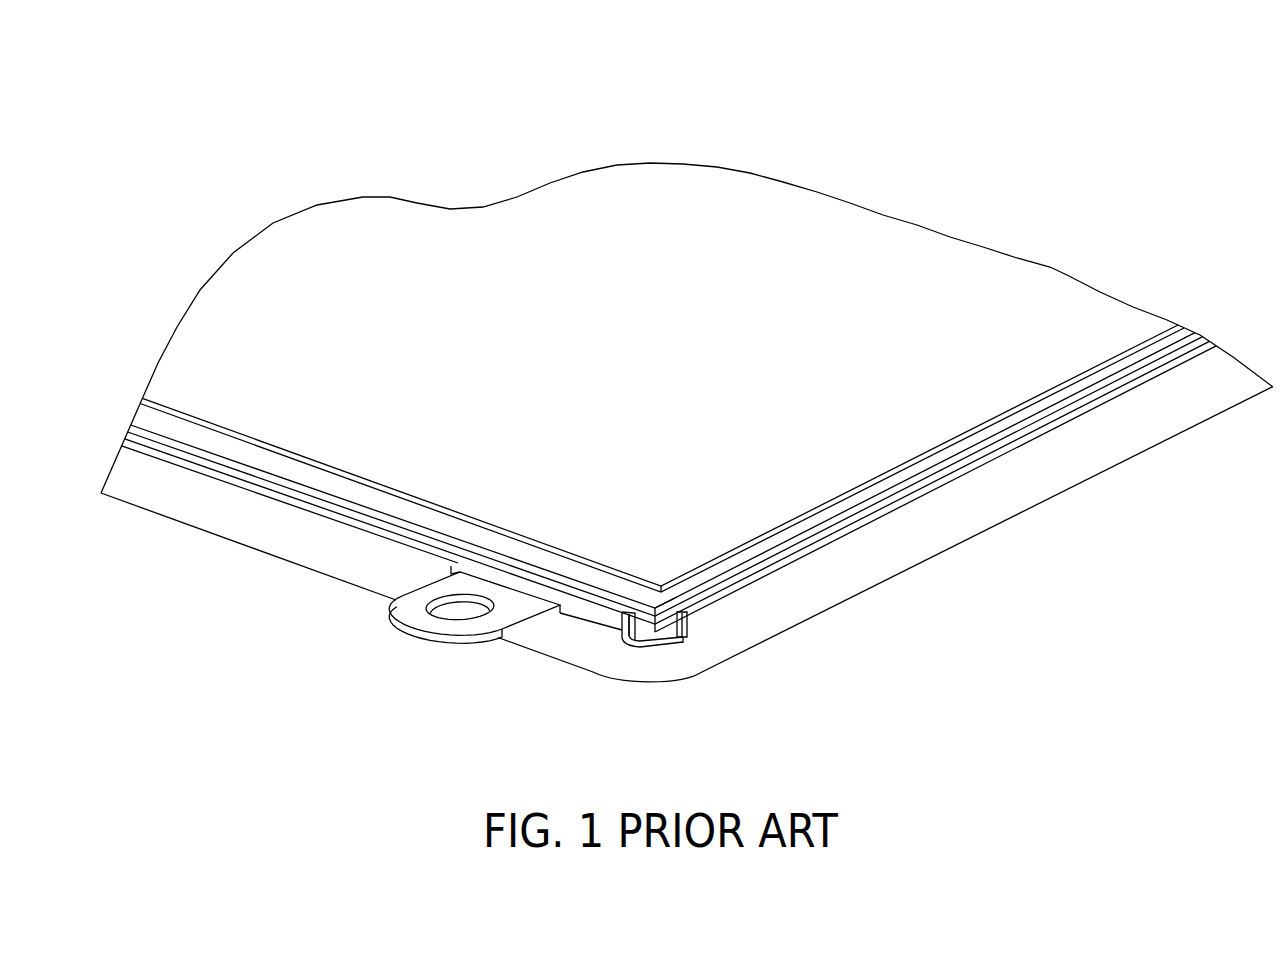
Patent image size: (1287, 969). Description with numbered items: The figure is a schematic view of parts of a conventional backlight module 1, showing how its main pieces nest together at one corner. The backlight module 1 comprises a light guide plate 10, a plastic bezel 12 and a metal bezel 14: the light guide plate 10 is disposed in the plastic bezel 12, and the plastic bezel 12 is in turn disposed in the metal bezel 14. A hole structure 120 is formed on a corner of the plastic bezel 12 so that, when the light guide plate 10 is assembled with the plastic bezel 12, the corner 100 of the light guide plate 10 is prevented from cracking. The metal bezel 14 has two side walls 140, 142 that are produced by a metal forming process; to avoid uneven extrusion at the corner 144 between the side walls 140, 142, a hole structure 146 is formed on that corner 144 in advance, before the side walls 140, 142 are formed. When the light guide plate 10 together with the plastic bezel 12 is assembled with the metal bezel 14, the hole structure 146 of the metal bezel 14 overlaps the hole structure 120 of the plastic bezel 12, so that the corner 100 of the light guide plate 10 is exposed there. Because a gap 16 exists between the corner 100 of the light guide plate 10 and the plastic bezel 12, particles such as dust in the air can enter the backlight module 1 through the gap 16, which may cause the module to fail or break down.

The backlight module 1 is at (1172, 103).
The light guide plate 10 is at (1186, 345).
The plastic bezel 12 is at (518, 575).
The corner 100 is at (652, 607).
The hole structure 120 is at (671, 590).
The metal bezel 14 is at (510, 660).
The side wall 140 is at (565, 652).
The side wall 142 is at (835, 586).
The corner 144 is at (660, 673).
The hole structure 146 is at (700, 667).
The gap 16 is at (638, 657).